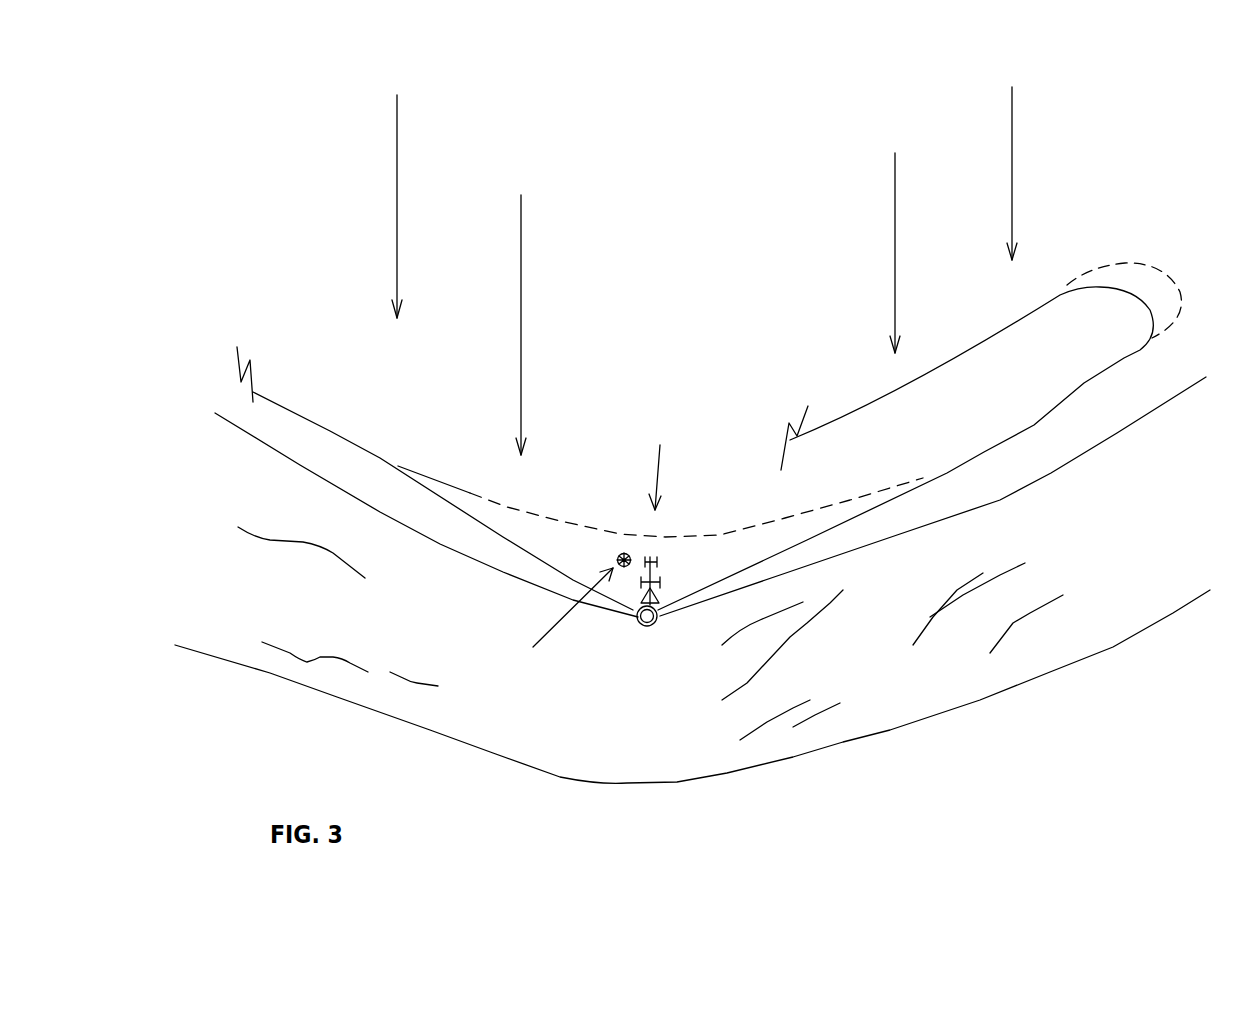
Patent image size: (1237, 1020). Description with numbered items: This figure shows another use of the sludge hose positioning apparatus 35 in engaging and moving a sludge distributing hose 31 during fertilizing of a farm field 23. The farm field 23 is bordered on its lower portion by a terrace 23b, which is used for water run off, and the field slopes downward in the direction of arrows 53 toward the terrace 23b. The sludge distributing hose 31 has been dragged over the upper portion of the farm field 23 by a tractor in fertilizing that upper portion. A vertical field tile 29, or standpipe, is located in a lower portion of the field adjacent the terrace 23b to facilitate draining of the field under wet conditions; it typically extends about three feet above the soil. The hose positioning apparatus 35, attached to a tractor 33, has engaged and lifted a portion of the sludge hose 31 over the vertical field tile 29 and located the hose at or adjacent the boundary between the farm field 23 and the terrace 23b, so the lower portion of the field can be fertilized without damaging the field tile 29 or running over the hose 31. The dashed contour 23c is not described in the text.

The farm field 23 is at (548, 50).
The terrace 23b is at (887, 671).
The original ground surface 23c is at (722, 533).
The vertical field tile 29 is at (622, 553).
The sludge distributing hose 31 is at (503, 537).
The tractor 33 is at (667, 572).
The sludge hose positioning apparatus 35 is at (650, 627).
The arrows 53 is at (520, 268).